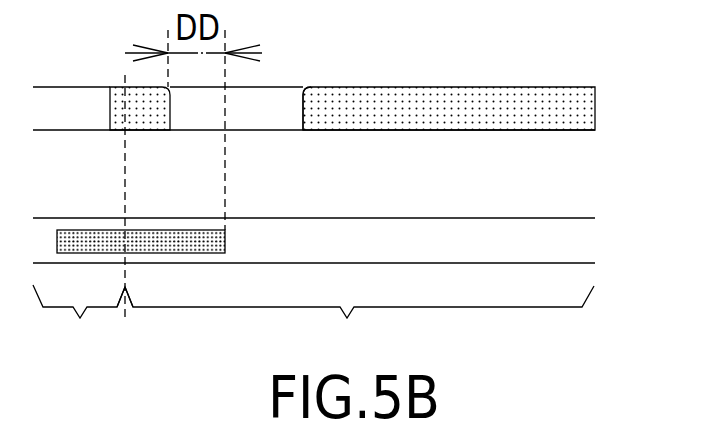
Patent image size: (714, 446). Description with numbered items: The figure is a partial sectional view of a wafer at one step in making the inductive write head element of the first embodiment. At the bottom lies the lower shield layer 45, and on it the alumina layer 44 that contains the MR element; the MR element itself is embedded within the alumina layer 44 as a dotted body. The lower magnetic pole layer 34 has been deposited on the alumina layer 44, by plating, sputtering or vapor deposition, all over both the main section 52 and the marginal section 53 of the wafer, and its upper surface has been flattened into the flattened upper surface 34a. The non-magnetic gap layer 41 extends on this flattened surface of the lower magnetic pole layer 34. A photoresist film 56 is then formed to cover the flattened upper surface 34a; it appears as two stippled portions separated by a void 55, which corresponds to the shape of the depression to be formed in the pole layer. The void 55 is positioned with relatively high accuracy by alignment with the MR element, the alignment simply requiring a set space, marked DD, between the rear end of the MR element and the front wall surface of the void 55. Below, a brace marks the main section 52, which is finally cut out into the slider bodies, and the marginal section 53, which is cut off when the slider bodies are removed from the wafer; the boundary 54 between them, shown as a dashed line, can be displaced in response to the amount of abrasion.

The lower magnetic pole layer 34 is at (103, 145).
The flattened upper surface 34a is at (572, 130).
The non-magnetic gap layer 41 is at (163, 232).
The alumina layer 44 is at (572, 218).
The lower shield layer 45 is at (572, 263).
The main section 52 is at (359, 323).
The marginal section 53 is at (79, 323).
The boundary 54 is at (125, 315).
The void 55 is at (303, 116).
The photoresist film 56 is at (113, 87).